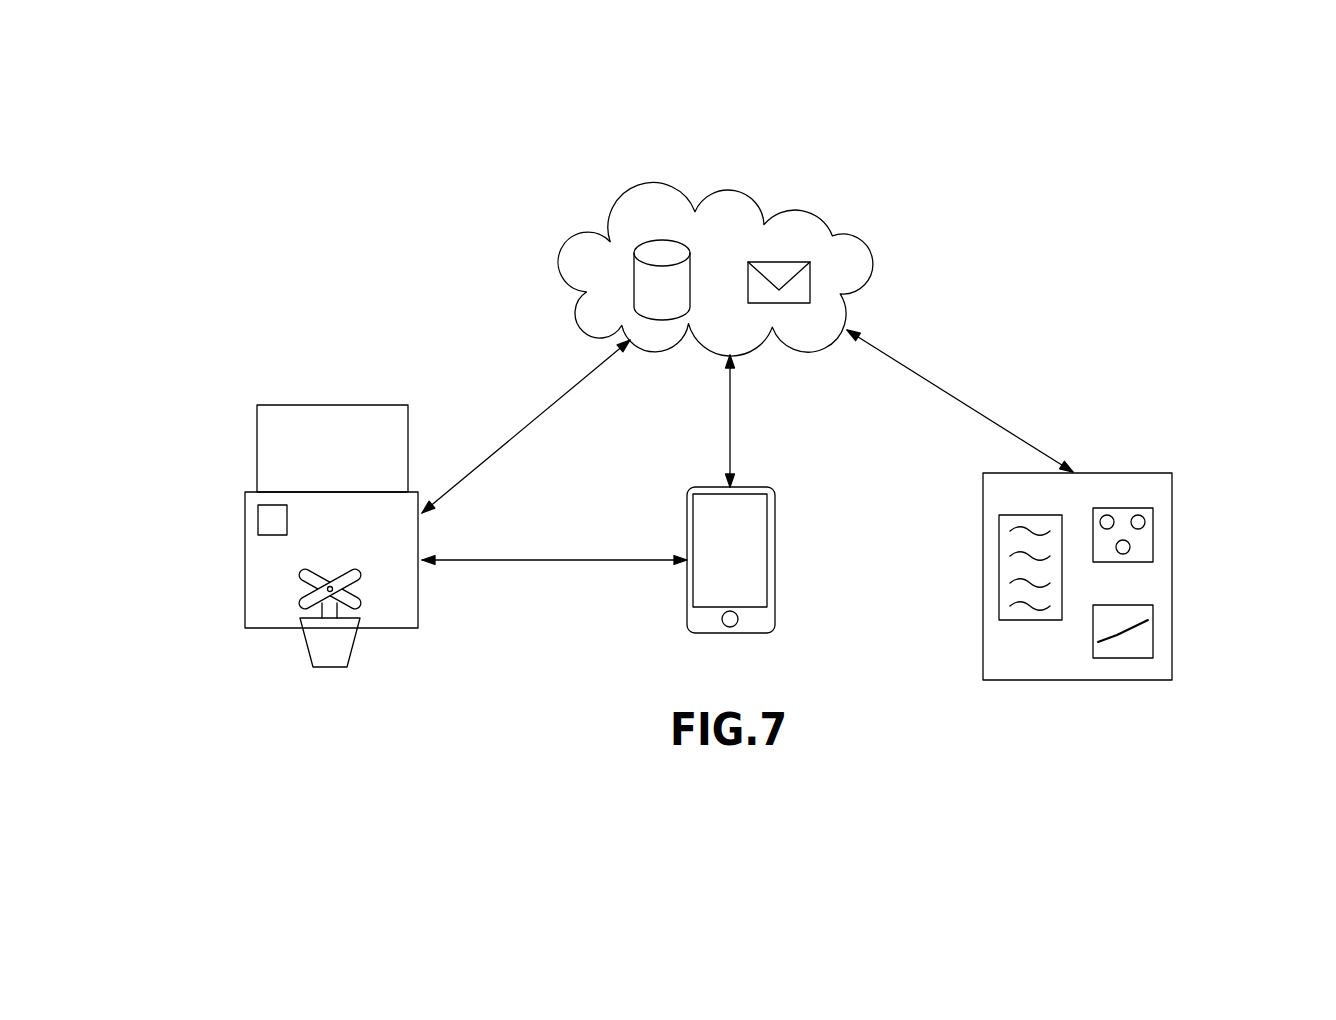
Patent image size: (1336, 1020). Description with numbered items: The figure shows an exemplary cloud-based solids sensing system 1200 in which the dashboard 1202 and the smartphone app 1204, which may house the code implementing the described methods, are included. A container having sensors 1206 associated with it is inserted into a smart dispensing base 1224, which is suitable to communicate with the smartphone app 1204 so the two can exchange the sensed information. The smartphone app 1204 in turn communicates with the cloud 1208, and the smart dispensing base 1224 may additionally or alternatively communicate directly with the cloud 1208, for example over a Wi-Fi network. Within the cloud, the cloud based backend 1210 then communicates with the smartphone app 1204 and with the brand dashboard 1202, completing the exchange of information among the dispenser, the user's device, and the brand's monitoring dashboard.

The system 1200 is at (1042, 152).
The dashboard 1202 is at (257, 443).
The smartphone app 1204 is at (757, 577).
The sensors 1206 is at (270, 525).
The cloud 1208 is at (870, 273).
The cloud based backend 1210 is at (712, 262).
The smart dispensing base 1224 is at (244, 579).